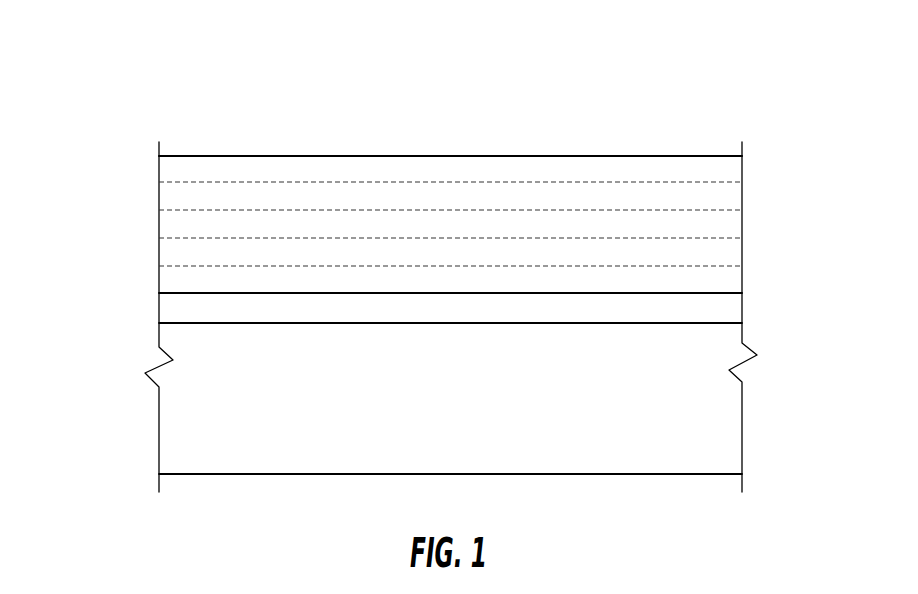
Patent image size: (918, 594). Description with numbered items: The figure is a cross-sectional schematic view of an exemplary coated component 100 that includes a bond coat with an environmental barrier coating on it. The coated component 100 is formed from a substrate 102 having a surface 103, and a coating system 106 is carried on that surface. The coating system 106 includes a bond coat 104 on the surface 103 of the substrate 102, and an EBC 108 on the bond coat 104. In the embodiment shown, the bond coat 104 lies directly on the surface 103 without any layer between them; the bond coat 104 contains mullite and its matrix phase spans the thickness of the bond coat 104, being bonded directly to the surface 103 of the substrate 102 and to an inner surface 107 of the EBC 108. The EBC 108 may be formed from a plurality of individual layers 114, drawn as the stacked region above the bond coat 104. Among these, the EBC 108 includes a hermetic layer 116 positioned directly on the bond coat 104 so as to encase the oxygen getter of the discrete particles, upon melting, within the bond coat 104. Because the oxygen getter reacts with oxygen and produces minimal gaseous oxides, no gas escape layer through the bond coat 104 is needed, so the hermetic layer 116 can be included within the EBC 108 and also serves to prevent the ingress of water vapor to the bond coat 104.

The coated component 100 is at (82, 94).
The substrate 102 is at (293, 432).
The surface 103 is at (511, 305).
The bond coat 104 is at (717, 313).
The coating system 106 is at (136, 158).
The inner surface 107 is at (361, 313).
The environmental barrier coating 108 is at (786, 158).
The individual layers 114 is at (265, 193).
The hermetic layer 116 is at (712, 272).